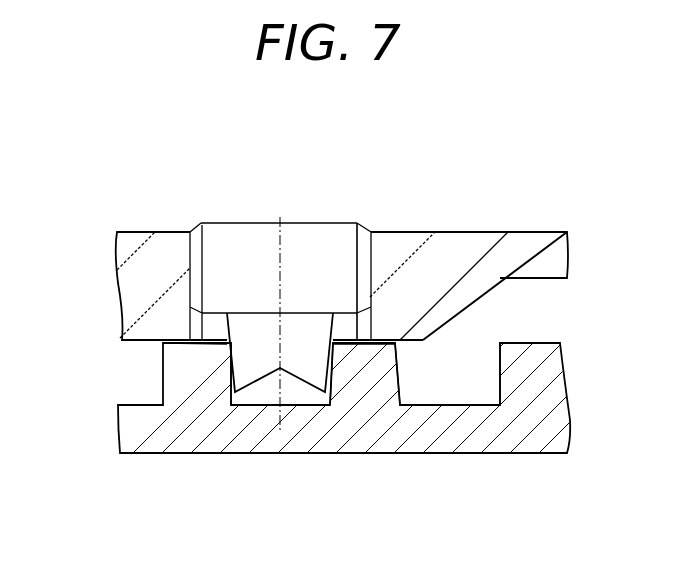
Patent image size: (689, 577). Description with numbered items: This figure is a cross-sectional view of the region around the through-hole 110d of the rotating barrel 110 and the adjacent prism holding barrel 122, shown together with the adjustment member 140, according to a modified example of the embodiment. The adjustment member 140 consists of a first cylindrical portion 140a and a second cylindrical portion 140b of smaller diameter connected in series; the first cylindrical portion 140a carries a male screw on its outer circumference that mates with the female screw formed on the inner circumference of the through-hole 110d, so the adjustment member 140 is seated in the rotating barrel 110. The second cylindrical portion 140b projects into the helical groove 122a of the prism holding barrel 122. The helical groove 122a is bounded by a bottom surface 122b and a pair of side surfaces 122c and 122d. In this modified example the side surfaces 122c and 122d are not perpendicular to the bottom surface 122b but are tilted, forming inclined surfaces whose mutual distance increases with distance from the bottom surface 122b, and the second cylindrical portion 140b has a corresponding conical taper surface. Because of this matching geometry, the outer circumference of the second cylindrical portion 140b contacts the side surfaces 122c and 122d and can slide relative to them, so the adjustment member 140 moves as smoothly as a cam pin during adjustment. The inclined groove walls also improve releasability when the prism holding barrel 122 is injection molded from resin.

The rotating barrel 110 is at (309, 244).
The through-hole 110d is at (372, 232).
The adjustment member 140 is at (251, 274).
The first cylindrical portion 140a is at (222, 246).
The second cylindrical portion 140b is at (303, 345).
The prism holding barrel 122 is at (400, 443).
The helical groove 122a is at (490, 400).
The bottom surface 122b is at (292, 406).
The side surface 122c is at (227, 345).
The side surface 122d is at (335, 345).